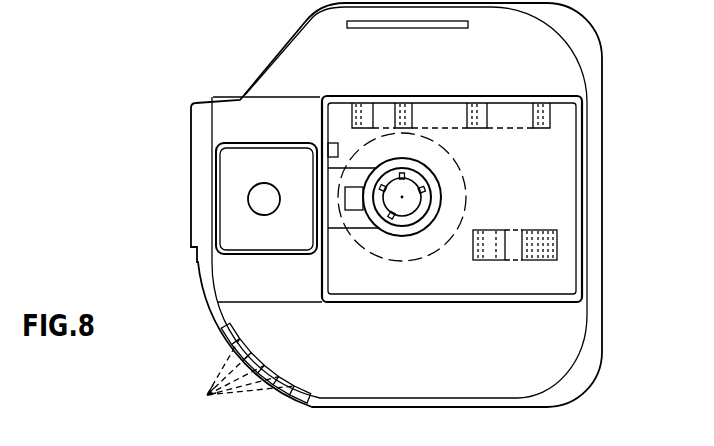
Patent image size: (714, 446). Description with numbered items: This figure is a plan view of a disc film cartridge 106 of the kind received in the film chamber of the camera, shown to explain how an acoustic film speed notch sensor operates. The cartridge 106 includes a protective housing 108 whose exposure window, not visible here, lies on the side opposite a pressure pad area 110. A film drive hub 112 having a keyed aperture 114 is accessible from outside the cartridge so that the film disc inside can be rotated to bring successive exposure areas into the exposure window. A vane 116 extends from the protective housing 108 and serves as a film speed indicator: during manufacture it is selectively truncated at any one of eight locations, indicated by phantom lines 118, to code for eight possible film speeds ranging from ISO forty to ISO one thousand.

The film cartridge 106 is at (258, 52).
The protective housing 108 is at (558, 68).
The pressure pad area 110 is at (227, 202).
The film drive hub 112 is at (427, 205).
The keyed aperture 114 is at (421, 196).
The vane 116 is at (218, 330).
The phantom lines 118 is at (237, 382).